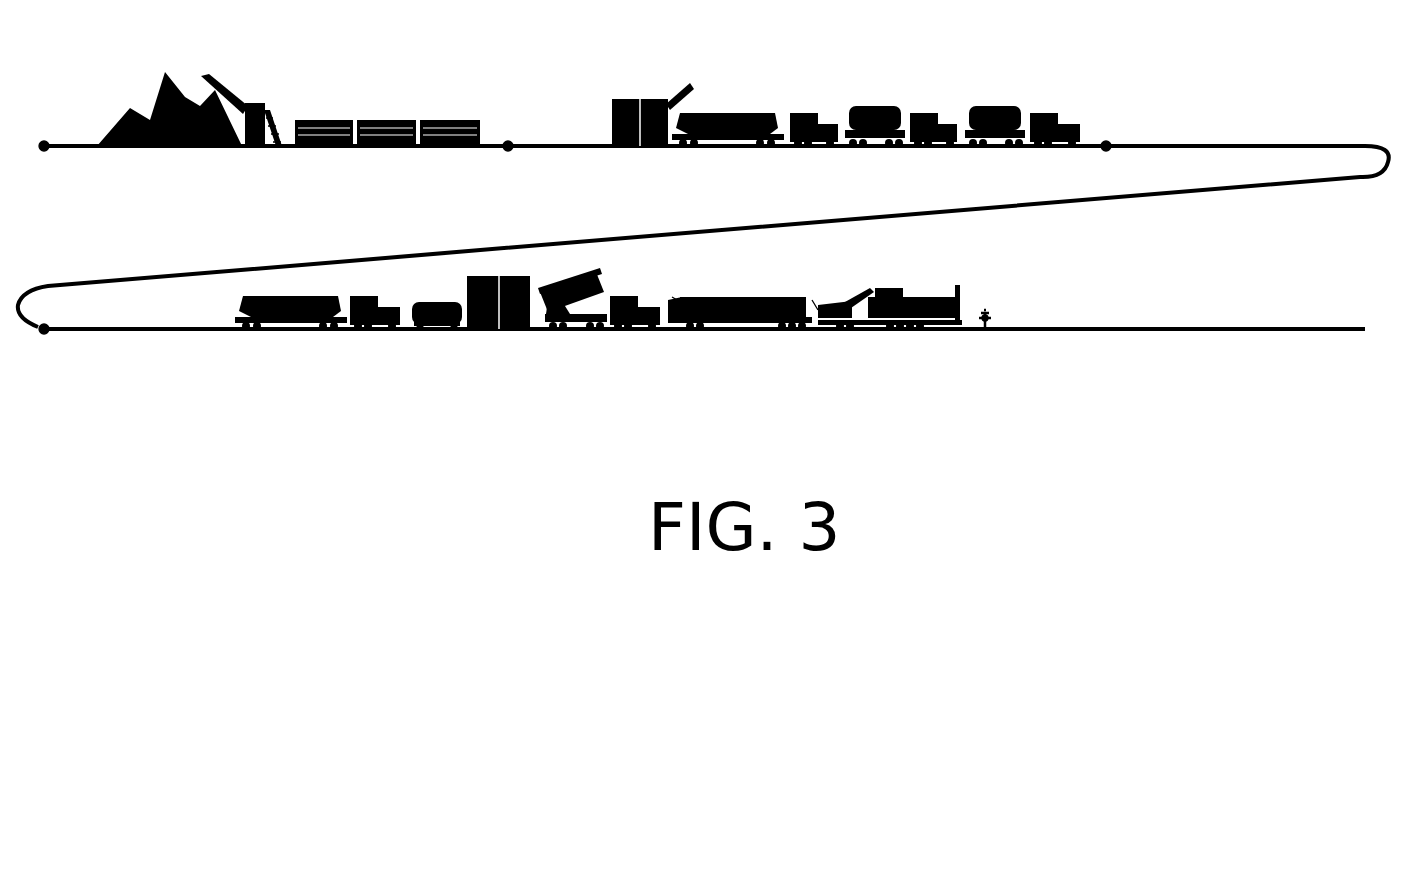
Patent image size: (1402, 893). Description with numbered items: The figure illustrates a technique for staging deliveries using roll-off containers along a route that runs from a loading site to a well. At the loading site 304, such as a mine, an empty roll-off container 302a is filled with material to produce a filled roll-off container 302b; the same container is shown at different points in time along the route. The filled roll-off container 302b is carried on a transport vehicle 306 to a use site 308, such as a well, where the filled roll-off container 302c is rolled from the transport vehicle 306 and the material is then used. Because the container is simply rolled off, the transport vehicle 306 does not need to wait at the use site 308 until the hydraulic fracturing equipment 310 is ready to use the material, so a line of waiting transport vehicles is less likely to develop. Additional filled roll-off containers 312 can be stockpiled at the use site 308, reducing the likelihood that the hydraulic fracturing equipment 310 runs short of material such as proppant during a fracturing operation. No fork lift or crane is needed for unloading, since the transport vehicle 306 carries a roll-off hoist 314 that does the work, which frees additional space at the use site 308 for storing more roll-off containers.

The roll-off container 302a is at (322, 120).
The filled roll-off container 302b is at (993, 110).
The filled roll-off container 302c is at (590, 290).
The loading site 304 is at (44, 140).
The transport vehicle 306 is at (1055, 120).
The use site 308 is at (986, 312).
The hydraulic fracturing equipment 310 is at (975, 348).
The additional filled roll-off containers 312 is at (435, 331).
The roll-off hoist 314 is at (580, 330).